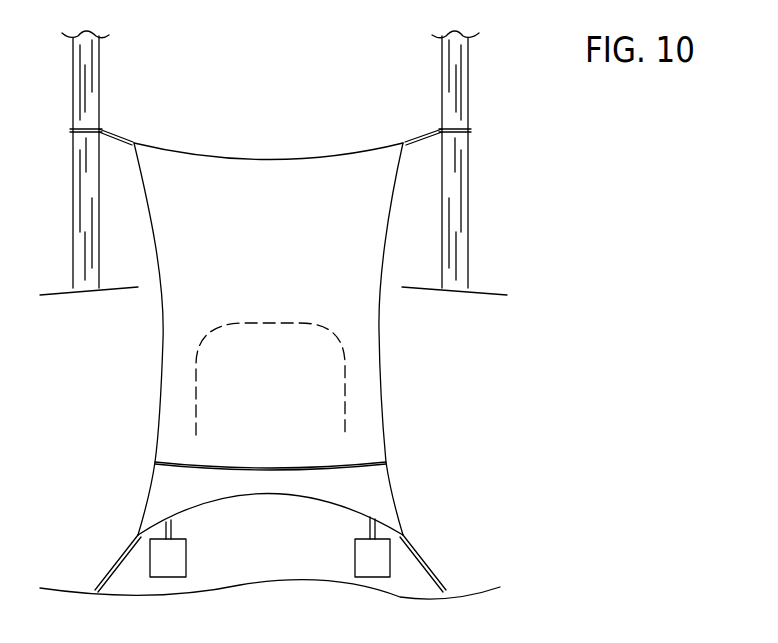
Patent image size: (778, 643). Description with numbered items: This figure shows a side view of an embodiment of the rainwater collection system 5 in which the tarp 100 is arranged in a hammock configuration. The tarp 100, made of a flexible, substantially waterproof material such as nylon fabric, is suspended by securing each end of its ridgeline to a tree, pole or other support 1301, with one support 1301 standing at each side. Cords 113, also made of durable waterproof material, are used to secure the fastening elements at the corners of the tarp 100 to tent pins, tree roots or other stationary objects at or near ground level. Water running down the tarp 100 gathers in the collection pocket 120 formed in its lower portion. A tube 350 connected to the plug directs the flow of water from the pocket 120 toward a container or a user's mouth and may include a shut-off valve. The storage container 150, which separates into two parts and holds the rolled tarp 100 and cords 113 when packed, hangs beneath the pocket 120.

The rainwater collection system 5 is at (276, 115).
The support 1301 is at (470, 190).
The tarp 100 is at (381, 370).
The collection pocket 120 is at (392, 487).
The storage container 150 is at (187, 557).
The tube 350 is at (368, 527).
The cord 113 is at (427, 561).